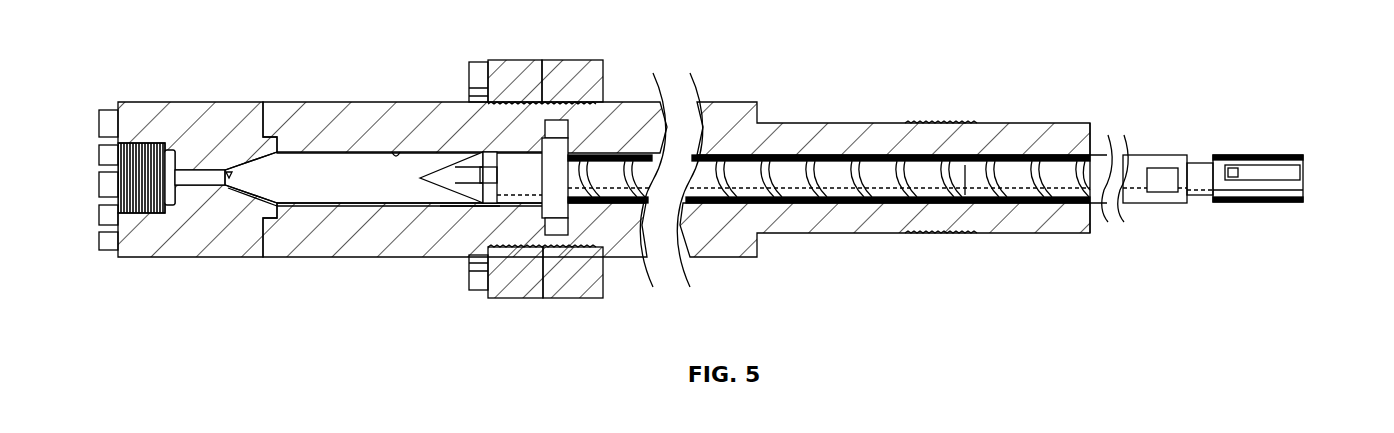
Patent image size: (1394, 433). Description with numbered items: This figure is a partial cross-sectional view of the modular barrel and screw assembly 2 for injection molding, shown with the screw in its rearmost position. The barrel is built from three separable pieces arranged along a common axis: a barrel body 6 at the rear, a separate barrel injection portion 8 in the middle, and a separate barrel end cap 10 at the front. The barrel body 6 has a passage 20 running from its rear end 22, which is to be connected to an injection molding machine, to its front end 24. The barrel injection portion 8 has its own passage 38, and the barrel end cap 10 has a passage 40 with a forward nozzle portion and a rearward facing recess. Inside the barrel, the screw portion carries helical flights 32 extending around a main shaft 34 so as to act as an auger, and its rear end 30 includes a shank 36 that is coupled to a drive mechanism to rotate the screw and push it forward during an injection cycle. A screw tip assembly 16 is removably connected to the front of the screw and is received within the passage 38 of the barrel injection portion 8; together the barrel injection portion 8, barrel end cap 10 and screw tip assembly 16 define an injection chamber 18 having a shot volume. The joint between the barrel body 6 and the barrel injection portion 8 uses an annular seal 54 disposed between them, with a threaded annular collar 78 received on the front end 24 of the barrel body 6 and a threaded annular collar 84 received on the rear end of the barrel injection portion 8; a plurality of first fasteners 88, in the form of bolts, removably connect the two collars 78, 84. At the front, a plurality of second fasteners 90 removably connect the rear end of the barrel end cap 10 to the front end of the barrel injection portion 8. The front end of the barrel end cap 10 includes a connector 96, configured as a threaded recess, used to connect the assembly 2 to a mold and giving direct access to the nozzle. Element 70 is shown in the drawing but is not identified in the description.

The modular barrel and screw assembly 2 is at (838, 38).
The barrel body 6 is at (737, 120).
The barrel injection portion 8 is at (362, 118).
The barrel end cap 10 is at (193, 125).
The screw tip assembly 16 is at (468, 208).
The injection chamber 18 is at (322, 175).
The passage 20 is at (890, 141).
The rear end 22 is at (1092, 135).
The front end 24 is at (568, 228).
The rear end 30 is at (1291, 211).
The flights 32 is at (892, 178).
The main shaft 34 is at (967, 172).
The shank 36 is at (1265, 188).
The passage 38 is at (403, 158).
The passage 40 is at (232, 170).
The annular seal 54 is at (555, 152).
The valve tip 70 is at (512, 168).
The annular collar 78 is at (574, 75).
The annular collar 84 is at (510, 75).
The first fasteners 88 is at (478, 72).
The second fasteners 90 is at (109, 117).
The connector 96 is at (130, 182).